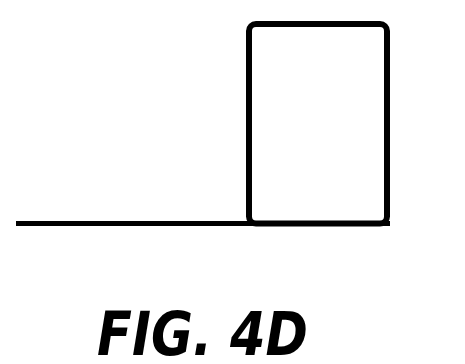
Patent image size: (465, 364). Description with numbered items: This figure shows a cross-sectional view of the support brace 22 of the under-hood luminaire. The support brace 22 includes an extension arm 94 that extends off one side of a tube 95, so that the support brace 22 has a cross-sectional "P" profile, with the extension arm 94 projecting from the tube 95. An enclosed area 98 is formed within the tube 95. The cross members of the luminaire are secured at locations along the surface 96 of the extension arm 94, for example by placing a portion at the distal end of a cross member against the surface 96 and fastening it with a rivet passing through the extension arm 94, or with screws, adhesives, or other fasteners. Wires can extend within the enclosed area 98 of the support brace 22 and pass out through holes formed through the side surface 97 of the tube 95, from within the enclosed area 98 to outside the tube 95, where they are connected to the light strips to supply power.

The support brace 22 is at (134, 74).
The extension arm 94 is at (118, 227).
The tube 95 is at (247, 96).
The surface 96 is at (148, 211).
The side surface 97 is at (236, 145).
The enclosed area 98 is at (372, 96).